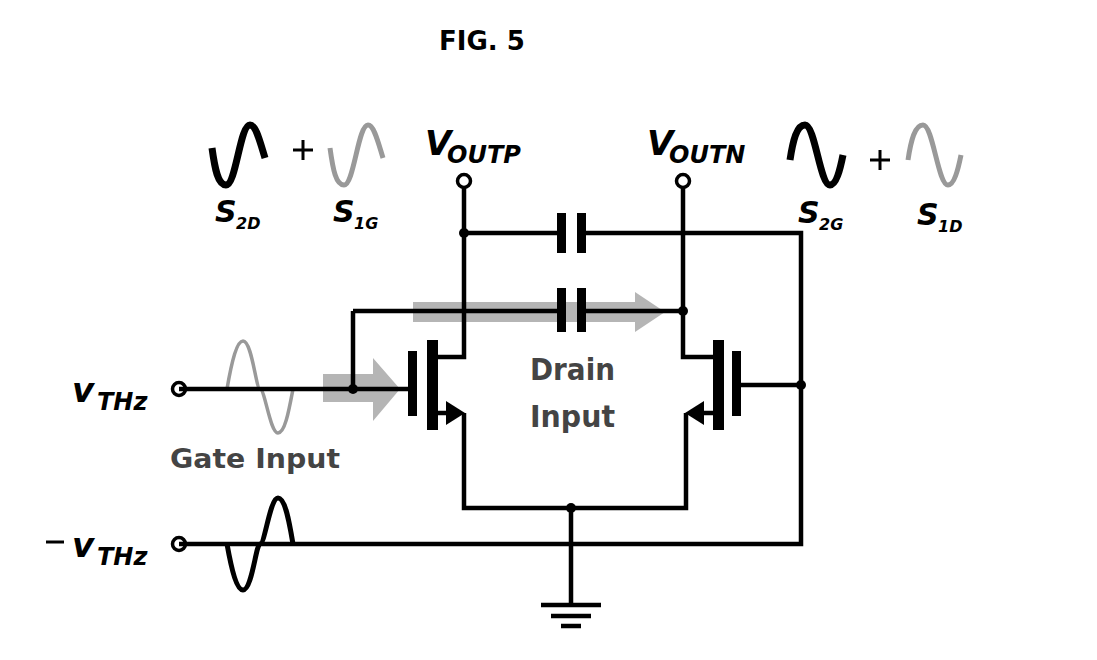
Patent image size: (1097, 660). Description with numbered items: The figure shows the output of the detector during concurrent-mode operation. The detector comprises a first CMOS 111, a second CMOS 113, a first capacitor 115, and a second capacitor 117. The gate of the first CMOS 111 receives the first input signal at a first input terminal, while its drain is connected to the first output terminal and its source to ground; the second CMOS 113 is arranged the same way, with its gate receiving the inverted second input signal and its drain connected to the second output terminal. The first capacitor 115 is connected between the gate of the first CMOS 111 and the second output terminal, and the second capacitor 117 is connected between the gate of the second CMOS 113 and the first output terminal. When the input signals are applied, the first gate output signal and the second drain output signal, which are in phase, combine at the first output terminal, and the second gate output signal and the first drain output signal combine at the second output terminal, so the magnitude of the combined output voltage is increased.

The first CMOS 111 is at (432, 430).
The second CMOS 113 is at (715, 430).
The first capacitor 115 is at (588, 331).
The second capacitor 117 is at (581, 212).